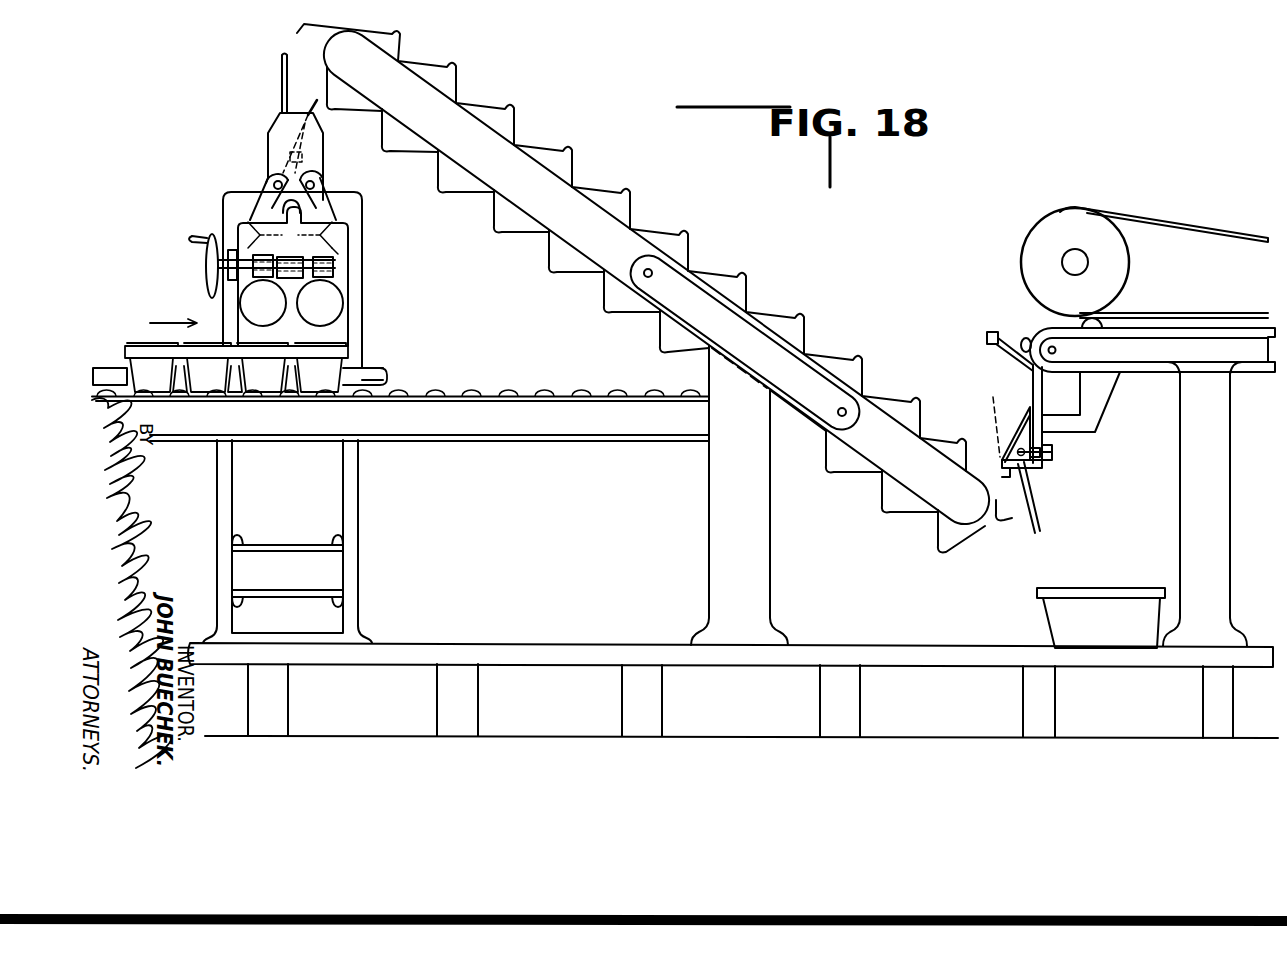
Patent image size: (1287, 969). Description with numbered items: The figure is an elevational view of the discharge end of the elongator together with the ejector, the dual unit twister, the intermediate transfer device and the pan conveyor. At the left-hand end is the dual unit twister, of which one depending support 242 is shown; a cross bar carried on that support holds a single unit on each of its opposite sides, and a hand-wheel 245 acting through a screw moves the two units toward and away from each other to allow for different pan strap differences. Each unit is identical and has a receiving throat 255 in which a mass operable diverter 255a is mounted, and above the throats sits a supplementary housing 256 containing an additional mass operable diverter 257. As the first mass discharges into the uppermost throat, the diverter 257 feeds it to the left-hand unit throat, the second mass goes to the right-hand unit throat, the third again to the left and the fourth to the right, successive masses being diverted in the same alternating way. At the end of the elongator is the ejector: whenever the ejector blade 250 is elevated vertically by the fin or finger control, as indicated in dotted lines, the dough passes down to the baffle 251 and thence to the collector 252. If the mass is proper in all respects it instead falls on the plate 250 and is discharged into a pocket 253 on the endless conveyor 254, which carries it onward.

The depending support 242 is at (311, 299).
The hand-wheel 245 is at (210, 274).
The ejector blade 250 is at (1020, 427).
The baffle 251 is at (1023, 525).
The collector 252 is at (1088, 613).
The pocket 253 is at (901, 413).
The endless conveyor 254 is at (880, 455).
The receiving throat 255 is at (343, 238).
The mass operable diverter 255a is at (335, 247).
The supplementary housing 256 is at (277, 143).
The additional mass operable diverter 257 is at (312, 132).